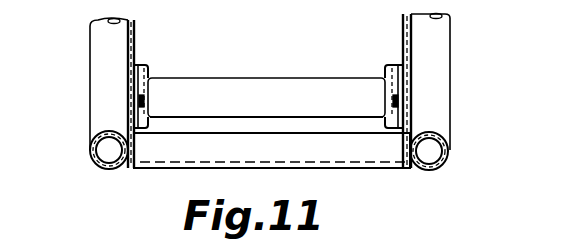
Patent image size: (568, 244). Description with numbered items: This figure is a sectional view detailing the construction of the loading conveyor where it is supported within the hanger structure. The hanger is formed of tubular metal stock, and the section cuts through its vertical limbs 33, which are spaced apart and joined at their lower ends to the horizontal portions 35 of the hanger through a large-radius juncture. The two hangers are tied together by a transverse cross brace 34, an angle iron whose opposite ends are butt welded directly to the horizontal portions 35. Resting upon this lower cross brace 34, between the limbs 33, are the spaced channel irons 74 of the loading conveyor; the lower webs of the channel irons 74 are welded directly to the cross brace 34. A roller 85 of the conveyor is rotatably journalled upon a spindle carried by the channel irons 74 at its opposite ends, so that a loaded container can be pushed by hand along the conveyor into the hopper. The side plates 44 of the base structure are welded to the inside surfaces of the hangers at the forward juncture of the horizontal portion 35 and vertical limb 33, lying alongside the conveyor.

The vertical limb 33 is at (98, 33).
The transverse cross brace 34 is at (180, 148).
The horizontal portion 35 is at (450, 150).
The side plate 44 is at (135, 33).
The channel iron 74 is at (148, 70).
The roller 85 is at (256, 90).